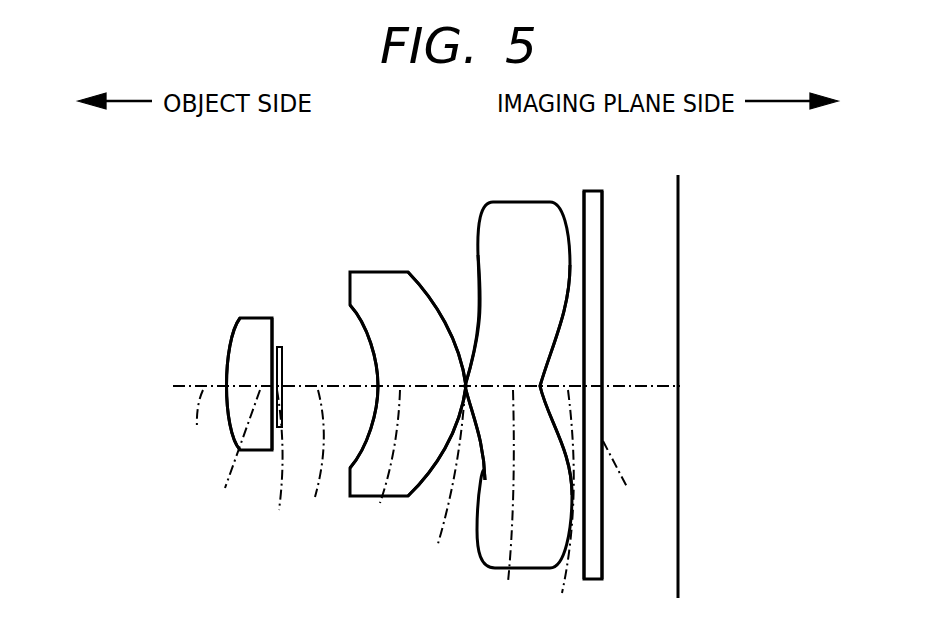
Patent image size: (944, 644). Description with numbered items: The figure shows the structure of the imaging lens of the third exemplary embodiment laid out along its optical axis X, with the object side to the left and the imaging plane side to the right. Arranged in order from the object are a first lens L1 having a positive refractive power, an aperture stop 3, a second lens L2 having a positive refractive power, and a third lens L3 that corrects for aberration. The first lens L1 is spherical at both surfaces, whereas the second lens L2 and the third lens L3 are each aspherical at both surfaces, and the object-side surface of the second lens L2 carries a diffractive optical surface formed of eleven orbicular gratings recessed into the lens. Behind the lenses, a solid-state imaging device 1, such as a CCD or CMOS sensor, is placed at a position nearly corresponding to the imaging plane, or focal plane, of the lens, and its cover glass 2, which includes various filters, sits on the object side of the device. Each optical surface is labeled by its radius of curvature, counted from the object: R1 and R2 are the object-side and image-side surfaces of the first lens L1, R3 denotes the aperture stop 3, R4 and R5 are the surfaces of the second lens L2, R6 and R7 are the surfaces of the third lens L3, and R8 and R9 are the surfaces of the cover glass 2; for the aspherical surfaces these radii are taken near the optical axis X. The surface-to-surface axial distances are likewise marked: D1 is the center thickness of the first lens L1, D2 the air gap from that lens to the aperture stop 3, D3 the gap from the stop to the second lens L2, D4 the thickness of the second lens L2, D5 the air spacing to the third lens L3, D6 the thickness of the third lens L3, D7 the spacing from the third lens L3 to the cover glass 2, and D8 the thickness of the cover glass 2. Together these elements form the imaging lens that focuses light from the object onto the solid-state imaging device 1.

The solid-state imaging device 1 is at (678, 175).
The cover glass 2 is at (590, 191).
The aperture stop 3 is at (280, 346).
The first lens L1 is at (262, 324).
The second lens L2 is at (378, 275).
The third lens L3 is at (513, 205).
The radius of curvature of first lens object-side surface R1 is at (230, 342).
The radius of curvature of first lens image-side surface R2 is at (275, 336).
The radius of curvature of aperture stop surface R3 is at (284, 368).
The radius of curvature of second lens object-side surface R4 is at (373, 385).
The radius of curvature of second lens image-side surface R5 is at (463, 382).
The radius of curvature of third lens object-side surface R6 is at (468, 383).
The radius of curvature of third lens image-side surface R7 is at (545, 383).
The radius of curvature of cover glass object-side surface R8 is at (583, 196).
The radius of curvature of cover glass image-side surface R9 is at (603, 212).
The center thickness of first lens D1 is at (238, 459).
The axial distance from first lens to aperture stop D2 is at (283, 467).
The axial distance from aperture stop to second lens D3 is at (320, 463).
The center thickness of second lens D4 is at (388, 465).
The axial distance from second lens to third lens D5 is at (444, 485).
The center thickness of third lens D6 is at (511, 501).
The axial distance from third lens to cover glass D7 is at (562, 509).
The thickness of cover glass D8 is at (625, 482).
The optical axis X is at (201, 427).